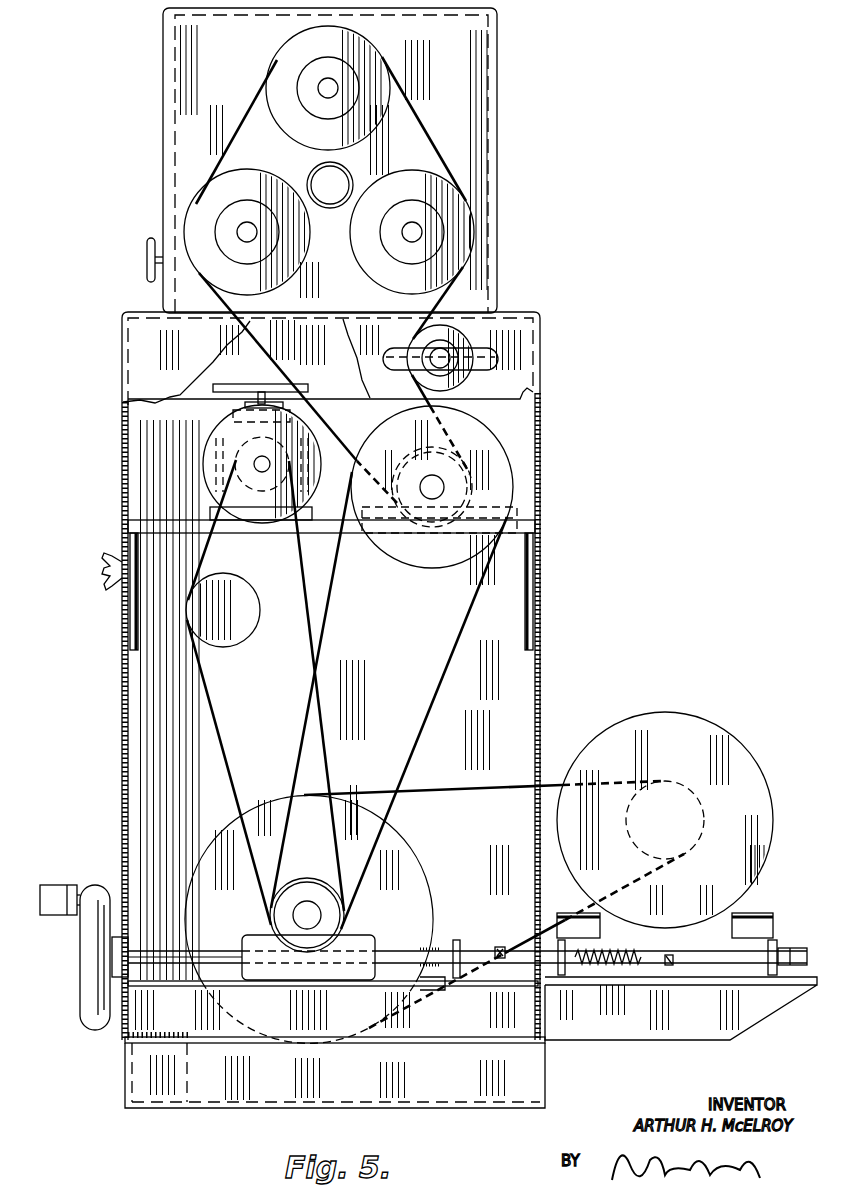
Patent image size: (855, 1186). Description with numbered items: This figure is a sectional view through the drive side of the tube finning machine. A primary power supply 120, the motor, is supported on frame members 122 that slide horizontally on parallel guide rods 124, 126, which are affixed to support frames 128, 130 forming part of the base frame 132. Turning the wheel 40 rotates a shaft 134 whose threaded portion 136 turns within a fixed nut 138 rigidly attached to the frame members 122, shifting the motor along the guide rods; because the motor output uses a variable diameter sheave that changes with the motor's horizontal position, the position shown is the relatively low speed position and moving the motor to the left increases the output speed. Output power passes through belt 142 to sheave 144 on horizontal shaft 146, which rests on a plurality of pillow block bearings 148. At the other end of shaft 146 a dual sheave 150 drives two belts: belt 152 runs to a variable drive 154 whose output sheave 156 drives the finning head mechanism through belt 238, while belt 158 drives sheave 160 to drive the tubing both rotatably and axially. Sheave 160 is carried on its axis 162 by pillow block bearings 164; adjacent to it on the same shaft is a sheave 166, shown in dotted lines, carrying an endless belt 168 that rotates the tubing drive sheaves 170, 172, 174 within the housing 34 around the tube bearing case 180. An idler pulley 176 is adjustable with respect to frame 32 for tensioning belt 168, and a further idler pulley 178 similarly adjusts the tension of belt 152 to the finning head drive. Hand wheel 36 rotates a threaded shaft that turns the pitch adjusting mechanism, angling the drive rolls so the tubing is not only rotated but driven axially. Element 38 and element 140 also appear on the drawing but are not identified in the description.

The housing 34 is at (162, 90).
The hand wheel 36 is at (147, 252).
The frame 32 is at (122, 372).
The wing nut 38 is at (110, 553).
The wheel 40 is at (85, 965).
The tubing drive sheave 172 is at (287, 128).
The tubing drive sheave 170 is at (258, 180).
The tubing drive sheave 174 is at (372, 274).
The tube bearing case 180 is at (353, 172).
The idler pulley 176 is at (463, 337).
The belt 238 is at (308, 389).
The sheave 156 is at (262, 385).
The variable drive 154 is at (233, 430).
The sheave 160 is at (433, 563).
The axis shaft 162 is at (428, 478).
The sheave 166 is at (463, 472).
The pillow block bearings 164 is at (510, 510).
The endless belt 168 is at (330, 418).
The idler pulley 178 is at (227, 583).
The belt 152 is at (215, 699).
The belt 158 is at (432, 709).
The sheave 144 is at (407, 857).
The horizontal shaft 146 is at (312, 900).
The dual sheave 150 is at (282, 920).
The pillow block bearings 148 is at (357, 945).
The guide rod 124 is at (487, 950).
The primary power supply 120 is at (733, 743).
The inner pulley 140 is at (703, 817).
The belt 142 is at (553, 783).
The frame members 122 is at (560, 917).
The guide rod 126 is at (653, 953).
The support frame 128 is at (813, 972).
The support frame 130 is at (420, 990).
The shaft 134 is at (532, 973).
The fixed nut 138 is at (568, 970).
The threaded portion 136 is at (642, 967).
The base frame 132 is at (637, 1031).